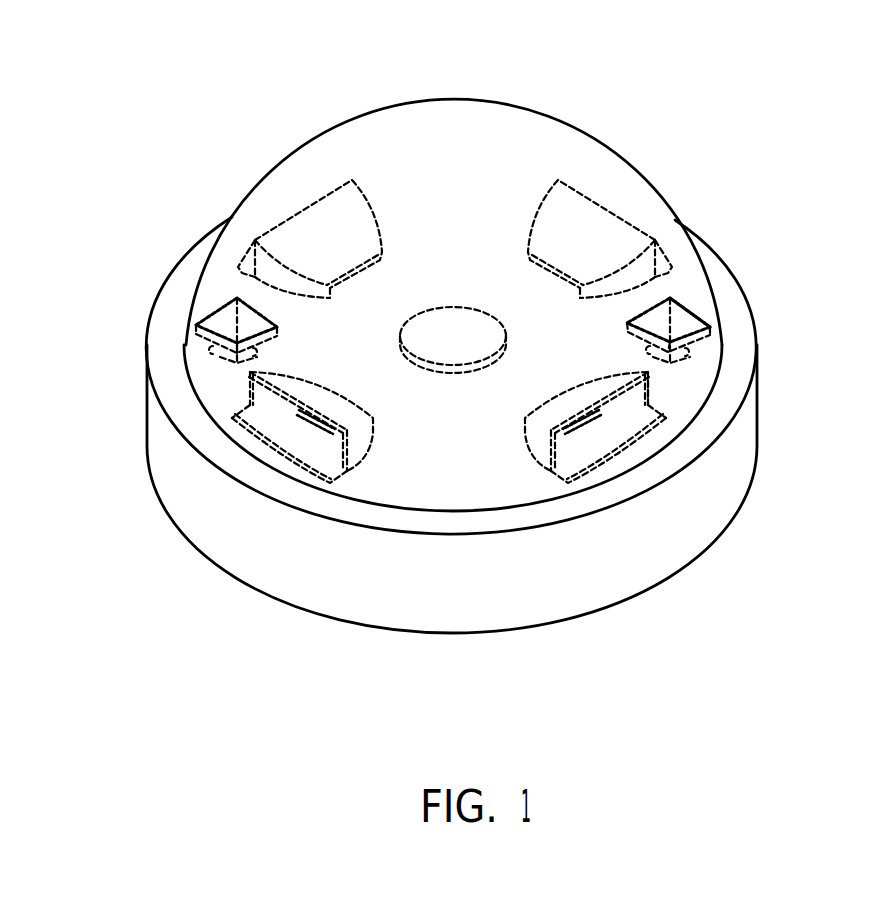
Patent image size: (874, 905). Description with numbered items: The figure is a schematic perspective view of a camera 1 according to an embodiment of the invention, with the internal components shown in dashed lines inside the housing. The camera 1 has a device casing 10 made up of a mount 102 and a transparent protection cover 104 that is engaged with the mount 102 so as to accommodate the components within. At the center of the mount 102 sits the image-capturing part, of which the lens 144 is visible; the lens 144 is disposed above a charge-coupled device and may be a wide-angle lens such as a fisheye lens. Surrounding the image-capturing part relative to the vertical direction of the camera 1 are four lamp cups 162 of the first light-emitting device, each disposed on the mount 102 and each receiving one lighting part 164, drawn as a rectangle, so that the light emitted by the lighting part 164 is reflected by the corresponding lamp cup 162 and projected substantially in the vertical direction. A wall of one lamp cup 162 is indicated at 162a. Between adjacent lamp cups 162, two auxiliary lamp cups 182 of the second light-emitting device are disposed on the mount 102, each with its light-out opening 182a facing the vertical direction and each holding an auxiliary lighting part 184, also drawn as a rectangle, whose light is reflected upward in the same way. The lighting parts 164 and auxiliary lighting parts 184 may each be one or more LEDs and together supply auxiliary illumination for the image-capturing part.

The camera 1 is at (797, 85).
The device casing 10 is at (78, 132).
The mount 102 is at (173, 293).
The transparent protection cover 104 is at (250, 207).
The lens 144 is at (436, 305).
The lamp cup 162 is at (602, 218).
The side wall of holding block 162a is at (650, 393).
The lighting part 164 is at (583, 425).
The auxiliary lamp cup 182 is at (700, 333).
The light-out opening 182a is at (682, 305).
The auxiliary lighting part 184 is at (670, 333).